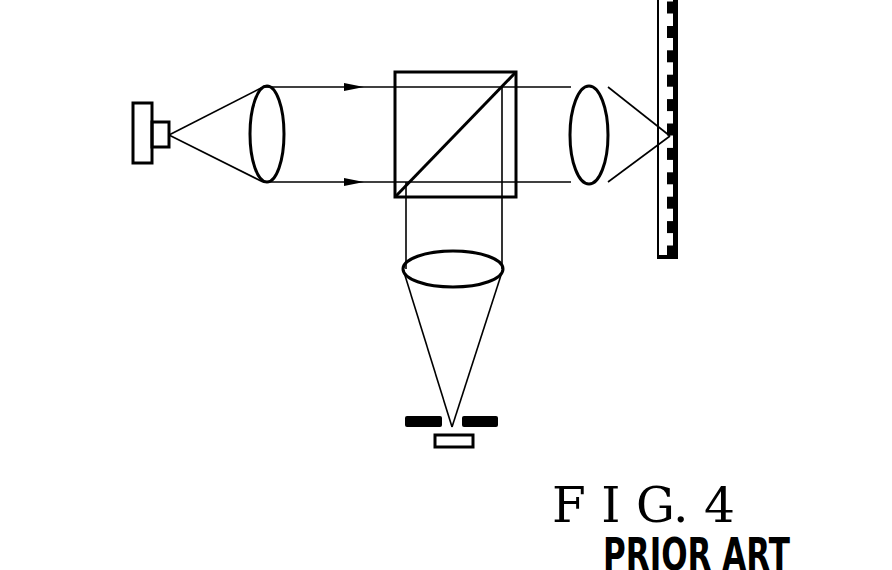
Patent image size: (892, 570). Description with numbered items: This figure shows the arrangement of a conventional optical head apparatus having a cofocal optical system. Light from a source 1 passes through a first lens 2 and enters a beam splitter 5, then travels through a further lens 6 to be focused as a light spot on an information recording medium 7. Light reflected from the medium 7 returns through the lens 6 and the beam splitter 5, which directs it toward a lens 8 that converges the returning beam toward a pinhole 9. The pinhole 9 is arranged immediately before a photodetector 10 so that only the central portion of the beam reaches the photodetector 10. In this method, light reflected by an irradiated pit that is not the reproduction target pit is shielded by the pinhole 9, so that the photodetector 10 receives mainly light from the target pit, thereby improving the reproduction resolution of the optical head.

The light source 1 is at (142, 165).
The collimating lens 2 is at (263, 103).
The beam splitter 5 is at (418, 82).
The objective lens 6 is at (588, 100).
The information recording medium 7 is at (680, 55).
The condenser lens 8 is at (492, 268).
The pinhole 9 is at (405, 420).
The photodetector 10 is at (438, 447).